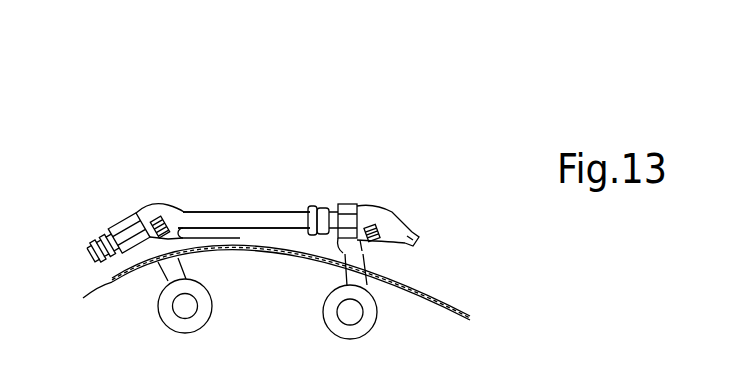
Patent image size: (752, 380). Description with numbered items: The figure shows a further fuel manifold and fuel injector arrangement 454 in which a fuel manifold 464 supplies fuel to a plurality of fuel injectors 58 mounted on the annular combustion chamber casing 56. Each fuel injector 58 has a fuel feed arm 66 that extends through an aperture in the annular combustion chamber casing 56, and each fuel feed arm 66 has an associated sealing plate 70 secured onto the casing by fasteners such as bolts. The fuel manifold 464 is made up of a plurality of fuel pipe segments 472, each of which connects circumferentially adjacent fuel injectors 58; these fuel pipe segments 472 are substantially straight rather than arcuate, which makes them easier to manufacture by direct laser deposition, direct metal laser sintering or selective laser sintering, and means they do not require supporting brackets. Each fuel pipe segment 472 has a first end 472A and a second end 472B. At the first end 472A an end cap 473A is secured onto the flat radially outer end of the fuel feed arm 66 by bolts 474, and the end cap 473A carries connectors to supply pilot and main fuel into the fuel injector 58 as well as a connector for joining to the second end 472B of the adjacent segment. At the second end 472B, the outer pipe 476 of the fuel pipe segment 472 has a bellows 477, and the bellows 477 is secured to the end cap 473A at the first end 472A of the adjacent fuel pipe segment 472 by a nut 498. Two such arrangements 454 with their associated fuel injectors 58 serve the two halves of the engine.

The fuel manifold and fuel injector arrangement 454 is at (226, 112).
The fuel manifold 464 is at (320, 120).
The fuel pipe segment 472 is at (110, 233).
The first end 472A is at (170, 212).
The second end 472B is at (333, 207).
The end cap 473A is at (177, 230).
The bolts 474 is at (140, 215).
The outer pipe 476 is at (283, 220).
The bellows 477 is at (318, 210).
The nut 498 is at (355, 212).
The annular combustion chamber casing 56 is at (120, 282).
The fuel injector 58 is at (173, 323).
The fuel feed arm 66 is at (173, 272).
The sealing plate 70 is at (330, 252).